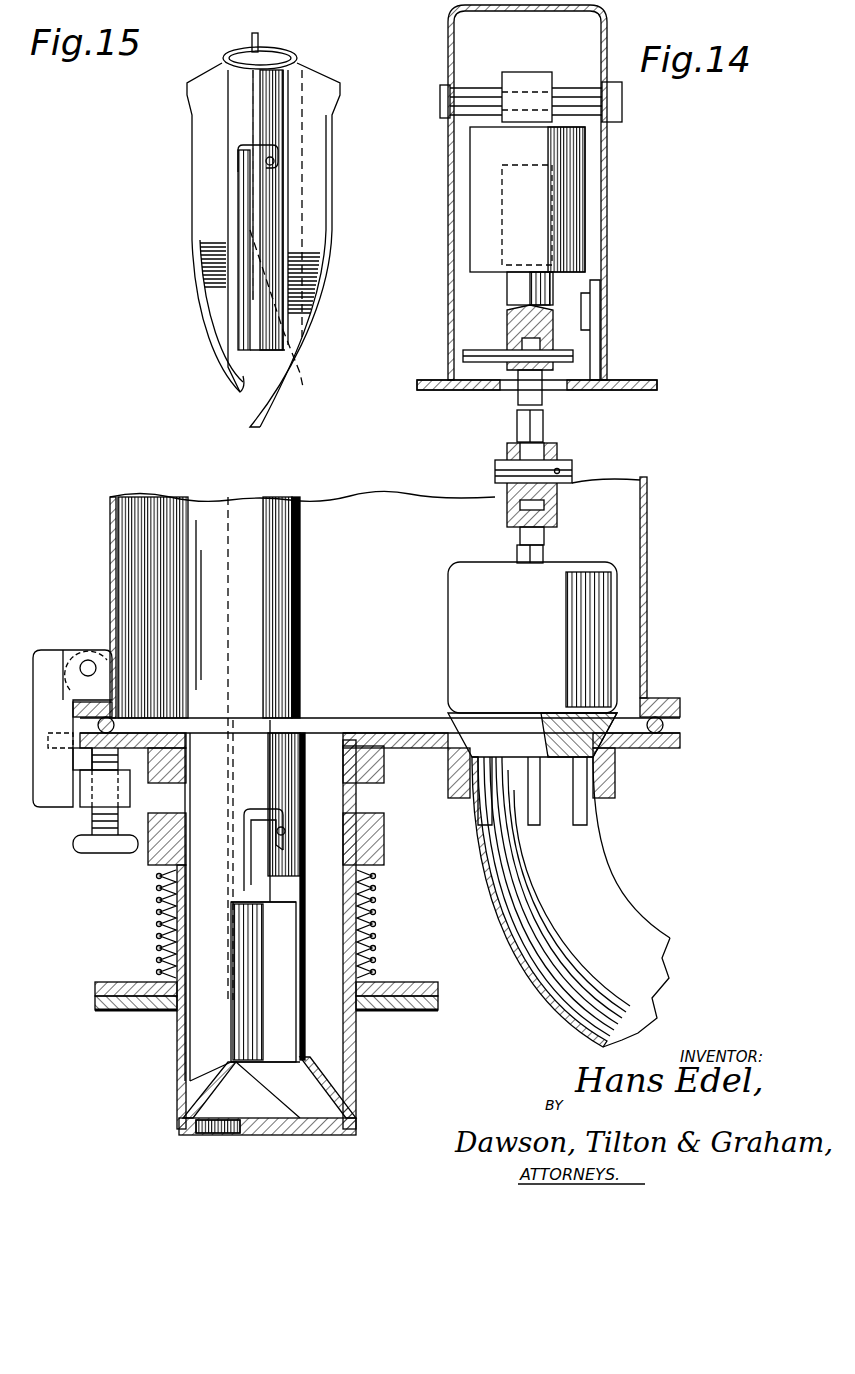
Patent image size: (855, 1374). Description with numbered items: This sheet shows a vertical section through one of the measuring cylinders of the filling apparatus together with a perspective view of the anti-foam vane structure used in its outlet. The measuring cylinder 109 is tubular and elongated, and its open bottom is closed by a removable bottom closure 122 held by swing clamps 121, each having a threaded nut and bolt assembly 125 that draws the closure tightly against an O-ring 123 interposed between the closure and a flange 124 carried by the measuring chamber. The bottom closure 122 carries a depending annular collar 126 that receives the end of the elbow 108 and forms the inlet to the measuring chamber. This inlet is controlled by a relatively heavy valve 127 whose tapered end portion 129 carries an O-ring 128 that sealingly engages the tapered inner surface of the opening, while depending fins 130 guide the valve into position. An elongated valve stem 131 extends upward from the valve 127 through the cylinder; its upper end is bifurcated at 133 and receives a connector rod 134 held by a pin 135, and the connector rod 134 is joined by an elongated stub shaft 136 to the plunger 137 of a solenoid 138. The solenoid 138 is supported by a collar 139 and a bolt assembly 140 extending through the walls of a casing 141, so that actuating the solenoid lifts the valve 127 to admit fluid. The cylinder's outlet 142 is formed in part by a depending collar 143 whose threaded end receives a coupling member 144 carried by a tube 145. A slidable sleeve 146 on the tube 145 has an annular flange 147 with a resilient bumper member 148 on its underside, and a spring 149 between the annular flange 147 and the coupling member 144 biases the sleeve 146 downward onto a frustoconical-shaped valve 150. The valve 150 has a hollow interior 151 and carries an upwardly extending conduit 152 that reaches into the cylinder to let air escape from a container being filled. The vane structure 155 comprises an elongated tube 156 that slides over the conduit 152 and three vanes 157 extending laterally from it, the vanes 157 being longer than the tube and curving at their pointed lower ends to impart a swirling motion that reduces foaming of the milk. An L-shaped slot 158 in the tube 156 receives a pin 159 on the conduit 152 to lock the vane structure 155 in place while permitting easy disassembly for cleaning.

In FIG. 14, the elbow 108 is at (622, 891).
In FIG. 14, the measuring cylinder 109 is at (648, 604).
In FIG. 14, the swing clamps 121 is at (65, 800).
In FIG. 14, the bottom closure 122 is at (672, 749).
In FIG. 14, the O-ring 123 is at (665, 725).
In FIG. 14, the flange 124 is at (673, 705).
In FIG. 14, the threaded nut and bolt assembly 125 is at (75, 845).
In FIG. 14, the depending annular collar 126 is at (616, 782).
In FIG. 14, the valve 127 is at (618, 636).
In FIG. 14, the O-ring 128 is at (448, 752).
In FIG. 14, the tapered end portion 129 is at (553, 742).
In FIG. 14, the fins 130 is at (578, 826).
In FIG. 14, the valve stem 131 is at (546, 556).
In FIG. 14, the bifurcated end 133 is at (556, 452).
In FIG. 14, the connector rod 134 is at (537, 421).
In FIG. 14, the pin 135 is at (566, 472).
In FIG. 14, the stub shaft 136 is at (483, 356).
In FIG. 14, the plunger 137 is at (512, 290).
In FIG. 14, the solenoid 138 is at (595, 206).
In FIG. 14, the collar 139 is at (537, 74).
In FIG. 14, the bolt assembly 140 is at (623, 104).
In FIG. 14, the casing 141 is at (448, 202).
In FIG. 14, the outlet 142 is at (348, 735).
In FIG. 14, the depending collar 143 is at (362, 798).
In FIG. 14, the coupling member 144 is at (385, 840).
In FIG. 14, the tube 145 is at (377, 905).
In FIG. 14, the slidable sleeve 146 is at (357, 1040).
In FIG. 14, the annular flange 147 is at (97, 983).
In FIG. 14, the resilient bumper member 148 is at (97, 1003).
In FIG. 14, the spring 149 is at (156, 906).
In FIG. 14, the frustoconical-shaped valve 150 is at (345, 1135).
In FIG. 14, the hollow interior 151 is at (270, 1125).
In FIG. 14, the conduit 152 is at (296, 1062).
In FIG. 15, the vane structure 155 is at (184, 206).
In FIG. 14, the tube 156 is at (243, 740).
In FIG. 15, the tube 156 is at (292, 52).
In FIG. 14, the vanes 157 is at (196, 735).
In FIG. 15, the vanes 157 is at (324, 131).
In FIG. 14, the L-shaped slot 158 is at (262, 808).
In FIG. 15, the L-shaped slot 158 is at (276, 153).
In FIG. 14, the pin 159 is at (281, 838).